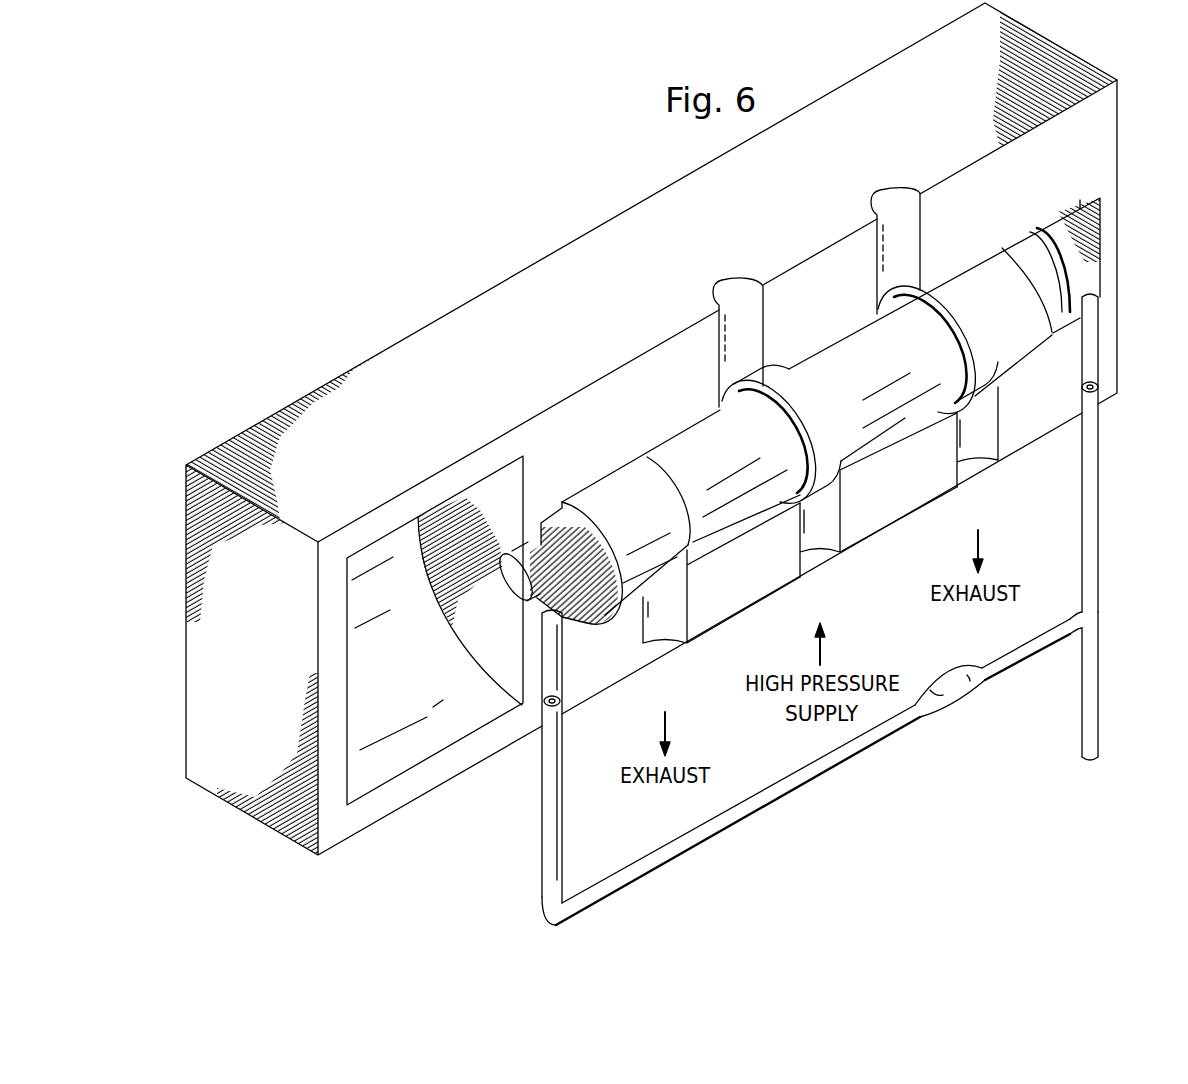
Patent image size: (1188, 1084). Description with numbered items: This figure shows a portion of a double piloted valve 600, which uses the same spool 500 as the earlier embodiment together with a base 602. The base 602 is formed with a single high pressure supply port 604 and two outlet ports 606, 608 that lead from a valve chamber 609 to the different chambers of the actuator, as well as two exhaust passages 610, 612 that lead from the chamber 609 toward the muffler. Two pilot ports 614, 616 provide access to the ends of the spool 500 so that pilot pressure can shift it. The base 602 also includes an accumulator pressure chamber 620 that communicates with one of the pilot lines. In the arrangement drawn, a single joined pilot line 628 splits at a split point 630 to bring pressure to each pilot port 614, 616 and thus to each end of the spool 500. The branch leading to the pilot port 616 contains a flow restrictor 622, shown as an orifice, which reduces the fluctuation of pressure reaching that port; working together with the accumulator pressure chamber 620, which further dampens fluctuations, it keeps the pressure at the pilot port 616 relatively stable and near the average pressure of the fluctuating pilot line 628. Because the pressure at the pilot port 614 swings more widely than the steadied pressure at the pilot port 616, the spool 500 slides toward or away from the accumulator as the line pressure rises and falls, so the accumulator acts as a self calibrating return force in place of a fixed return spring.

The piloted valve 600 is at (496, 258).
The base 602 is at (615, 388).
The accumulator pressure chamber 620 is at (353, 562).
The spool 500 is at (604, 481).
The outlet port 608 is at (746, 292).
The outlet port 606 is at (905, 197).
The valve chamber 609 is at (1035, 233).
The pilot port 614 is at (1100, 350).
The single joined pilot line 628 is at (1100, 690).
The split point 630 is at (1100, 600).
The pilot port 616 is at (552, 660).
The flow restrictor 622 is at (964, 698).
The exhaust passage 612 is at (665, 640).
The high pressure supply port 604 is at (822, 540).
The exhaust passage 610 is at (968, 456).